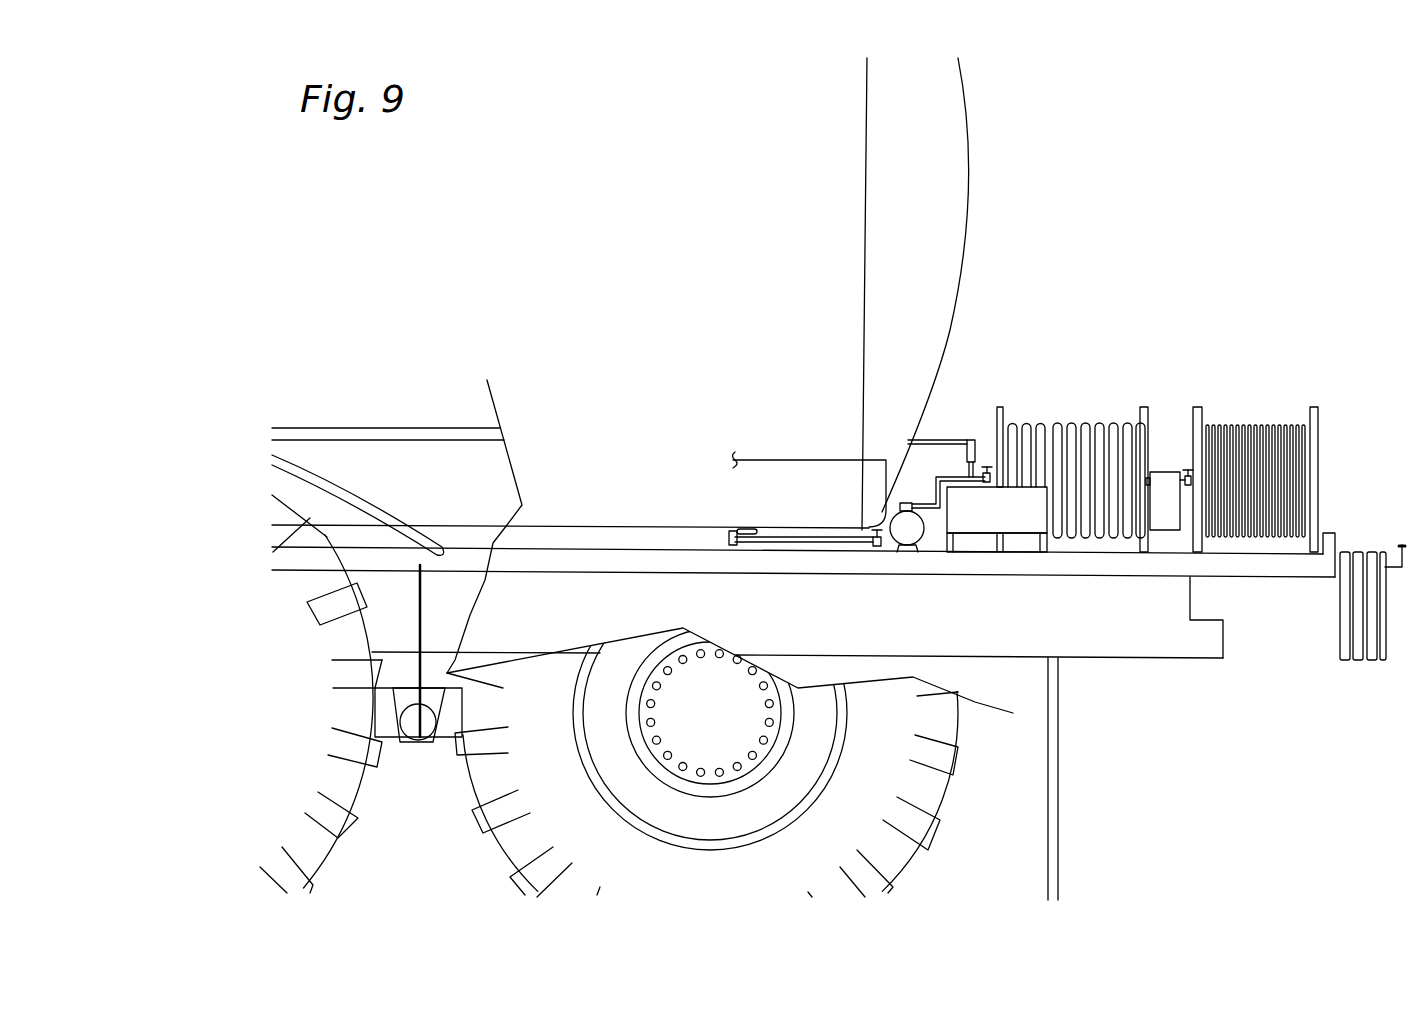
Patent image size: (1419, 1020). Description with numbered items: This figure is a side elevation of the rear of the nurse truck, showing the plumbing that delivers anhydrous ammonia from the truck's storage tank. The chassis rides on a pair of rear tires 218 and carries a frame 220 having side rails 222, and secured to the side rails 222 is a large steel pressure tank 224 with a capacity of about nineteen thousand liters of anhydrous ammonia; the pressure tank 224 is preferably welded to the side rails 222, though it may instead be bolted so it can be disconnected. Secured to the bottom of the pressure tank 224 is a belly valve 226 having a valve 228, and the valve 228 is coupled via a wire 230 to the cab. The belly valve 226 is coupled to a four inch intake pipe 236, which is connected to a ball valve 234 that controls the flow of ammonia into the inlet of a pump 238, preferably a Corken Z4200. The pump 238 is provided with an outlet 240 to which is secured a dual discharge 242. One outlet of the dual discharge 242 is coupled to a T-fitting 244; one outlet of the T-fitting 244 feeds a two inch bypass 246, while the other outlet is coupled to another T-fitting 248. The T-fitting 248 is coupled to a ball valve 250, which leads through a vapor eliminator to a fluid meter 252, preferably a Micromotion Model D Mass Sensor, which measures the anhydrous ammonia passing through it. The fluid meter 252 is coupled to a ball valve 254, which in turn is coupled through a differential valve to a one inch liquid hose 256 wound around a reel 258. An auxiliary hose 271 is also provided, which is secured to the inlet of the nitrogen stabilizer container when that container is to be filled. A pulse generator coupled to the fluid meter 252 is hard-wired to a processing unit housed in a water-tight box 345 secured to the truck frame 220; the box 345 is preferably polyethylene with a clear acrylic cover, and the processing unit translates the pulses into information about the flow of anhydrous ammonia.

The rear tires 218 is at (1270, 568).
The frame 220 is at (1027, 683).
The side rails 222 is at (683, 575).
The pressure tank 224 is at (620, 365).
The belly valve 226 is at (730, 543).
The valve 228 is at (728, 530).
The wire 230 is at (748, 530).
The ball valve 234 is at (882, 547).
The intake pipe 236 is at (800, 543).
The pump 238 is at (920, 552).
The outlet 240 is at (891, 514).
The dual discharge 242 is at (898, 506).
The T-fitting 244 is at (918, 498).
The bypass 246 is at (880, 460).
The T-fitting 248 is at (983, 465).
The ball valve 250 is at (993, 470).
The water-tight box 345 is at (1028, 493).
The fluid meter 252 is at (1162, 528).
The ball valve 254 is at (1186, 470).
The liquid hose 256 is at (1268, 425).
The reel 258 is at (1318, 497).
The auxiliary hose 271 is at (1328, 637).